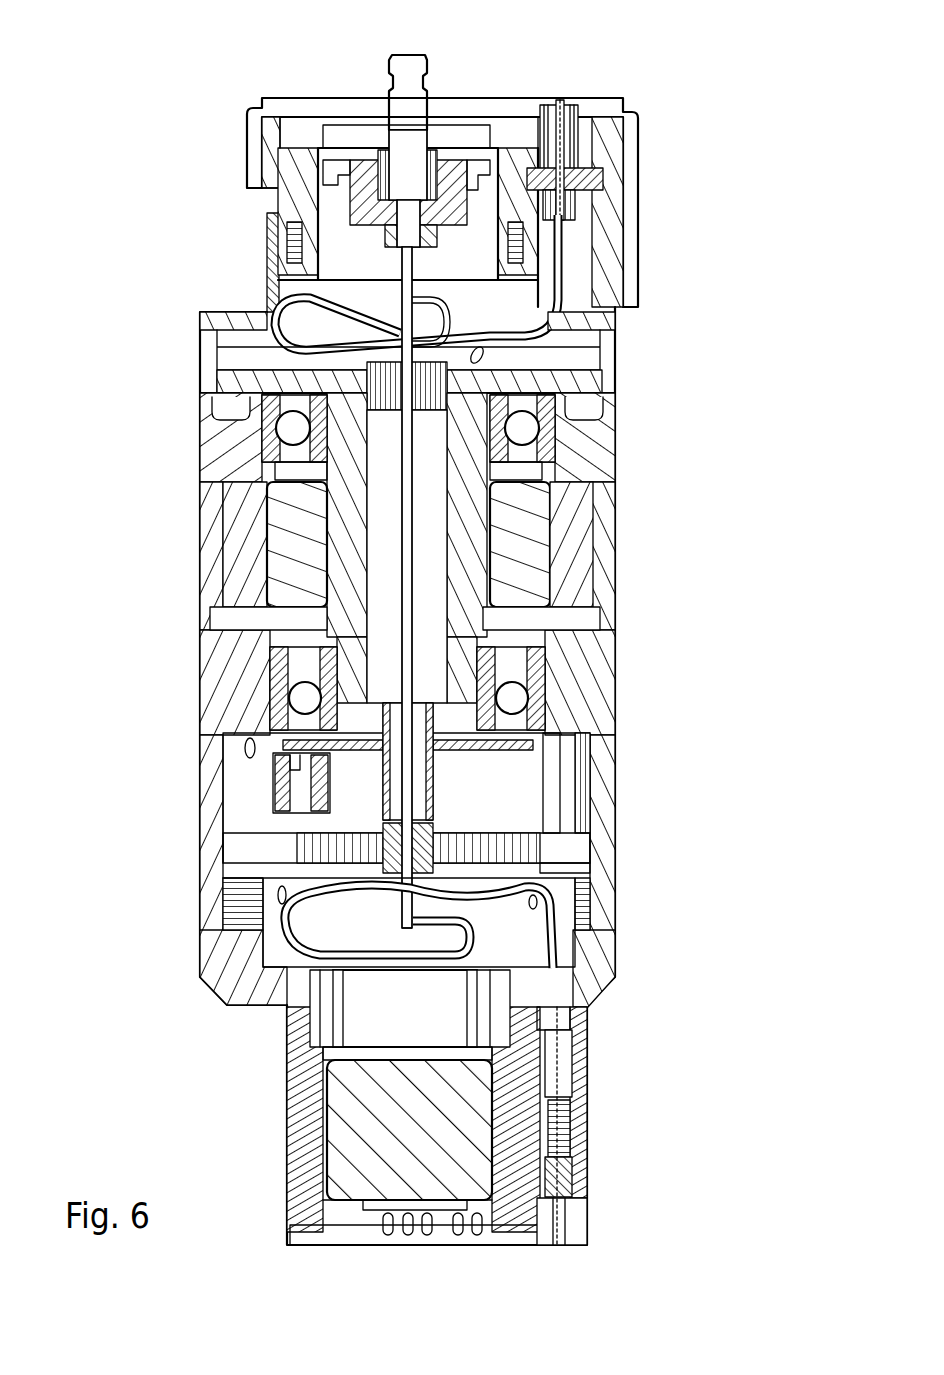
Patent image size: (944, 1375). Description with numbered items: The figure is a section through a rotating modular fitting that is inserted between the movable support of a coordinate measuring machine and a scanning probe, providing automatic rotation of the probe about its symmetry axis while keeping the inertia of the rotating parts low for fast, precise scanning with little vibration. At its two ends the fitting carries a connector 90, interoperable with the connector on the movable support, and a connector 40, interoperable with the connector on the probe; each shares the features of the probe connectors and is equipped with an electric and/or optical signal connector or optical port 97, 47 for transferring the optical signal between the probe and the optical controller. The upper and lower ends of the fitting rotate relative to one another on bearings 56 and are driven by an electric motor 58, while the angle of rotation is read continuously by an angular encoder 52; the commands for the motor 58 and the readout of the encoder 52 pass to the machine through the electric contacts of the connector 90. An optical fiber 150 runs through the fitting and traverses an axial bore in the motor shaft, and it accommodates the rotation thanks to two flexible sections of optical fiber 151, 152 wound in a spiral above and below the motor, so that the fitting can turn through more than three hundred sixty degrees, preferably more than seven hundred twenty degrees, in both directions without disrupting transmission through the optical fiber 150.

The connector 90 is at (560, 98).
The optical port 97 is at (568, 100).
The flexible section of optical fiber 151 is at (300, 310).
The bearings 56 is at (527, 428).
The electric motor 58 is at (533, 537).
The angular encoder 52 is at (305, 785).
The optical fiber 150 is at (437, 803).
The flexible section of optical fiber 152 is at (300, 945).
The connector 40 is at (588, 1222).
The optical port 47 is at (558, 1245).